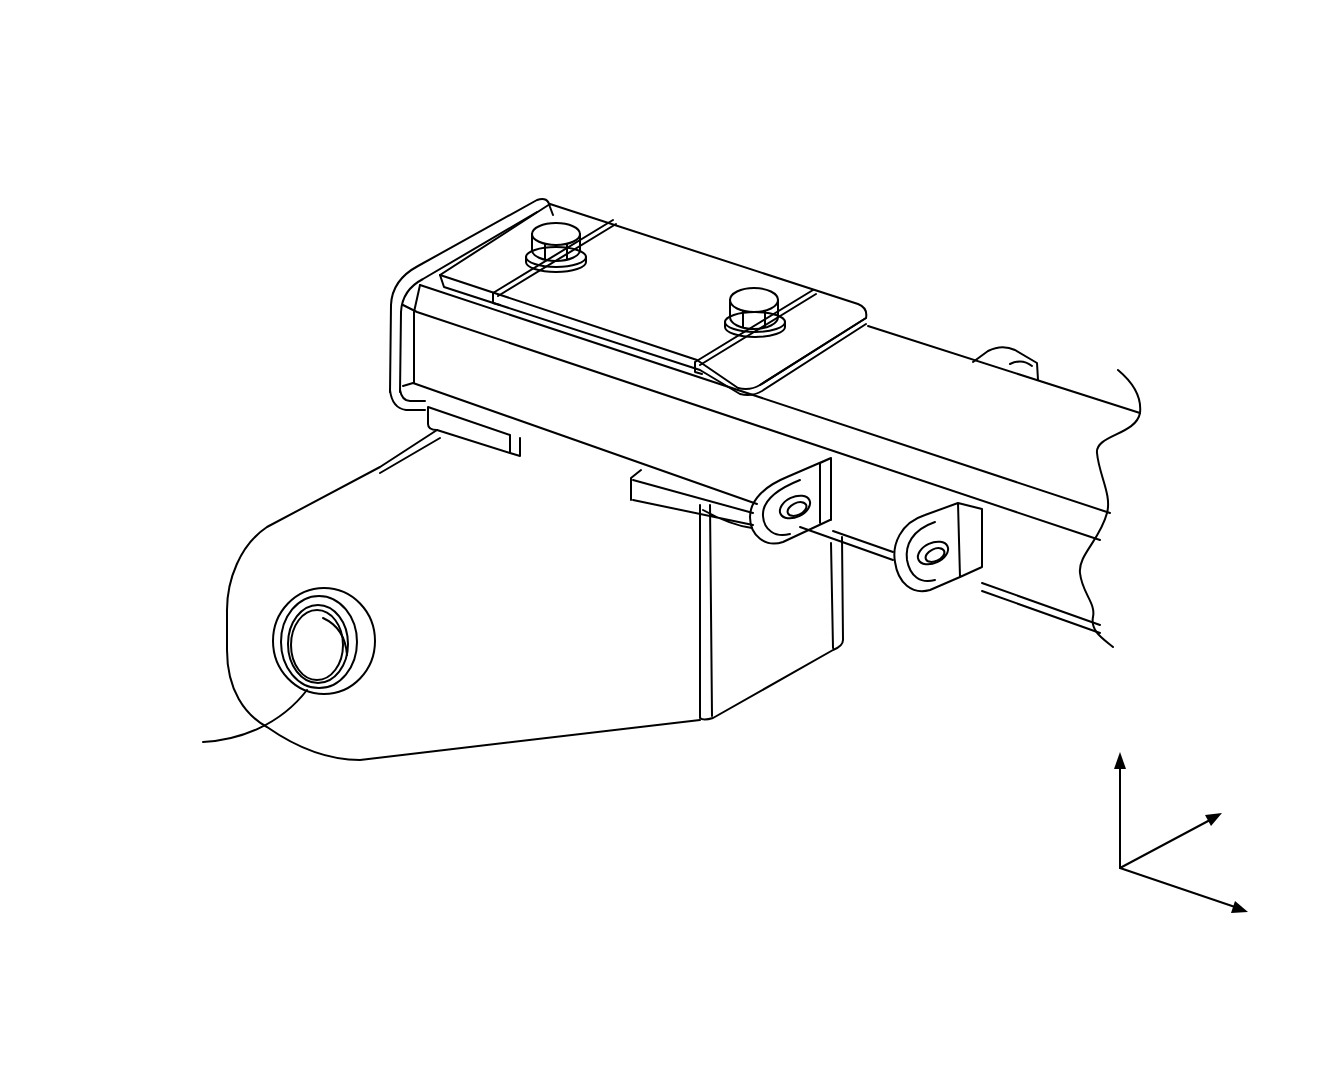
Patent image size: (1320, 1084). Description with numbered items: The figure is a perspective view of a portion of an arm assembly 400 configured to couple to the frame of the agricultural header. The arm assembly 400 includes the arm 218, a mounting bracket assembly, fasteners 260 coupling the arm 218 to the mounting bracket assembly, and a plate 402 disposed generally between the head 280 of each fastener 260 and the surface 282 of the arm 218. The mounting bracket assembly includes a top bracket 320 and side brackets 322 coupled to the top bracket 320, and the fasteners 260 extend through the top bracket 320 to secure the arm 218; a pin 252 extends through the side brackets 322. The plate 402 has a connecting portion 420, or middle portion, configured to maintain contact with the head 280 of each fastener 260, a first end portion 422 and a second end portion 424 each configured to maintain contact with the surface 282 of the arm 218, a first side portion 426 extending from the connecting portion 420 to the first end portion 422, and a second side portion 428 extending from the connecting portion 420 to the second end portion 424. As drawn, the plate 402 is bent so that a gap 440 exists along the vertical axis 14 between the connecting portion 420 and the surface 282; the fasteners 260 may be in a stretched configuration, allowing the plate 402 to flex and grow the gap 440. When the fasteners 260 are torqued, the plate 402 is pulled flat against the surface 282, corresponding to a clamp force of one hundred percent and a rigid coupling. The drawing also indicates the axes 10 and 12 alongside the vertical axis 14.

The longitudinal direction 10 is at (1180, 890).
The lateral direction 12 is at (1167, 847).
The vertical axis 14 is at (1120, 810).
The arm 218 is at (1043, 607).
The pin 252 is at (305, 692).
The fasteners 260 is at (866, 162).
The head 280 is at (757, 297).
The surface 282 is at (960, 370).
The top bracket 320 is at (437, 412).
The side brackets 322 is at (680, 727).
The arm assembly 400 is at (1058, 127).
The plate 402 is at (778, 113).
The connecting portion 420 is at (680, 243).
The first end portion 422 is at (880, 322).
The second end portion 424 is at (553, 210).
The first side portion 426 is at (840, 297).
The second side portion 428 is at (583, 220).
The gap 440 is at (597, 350).